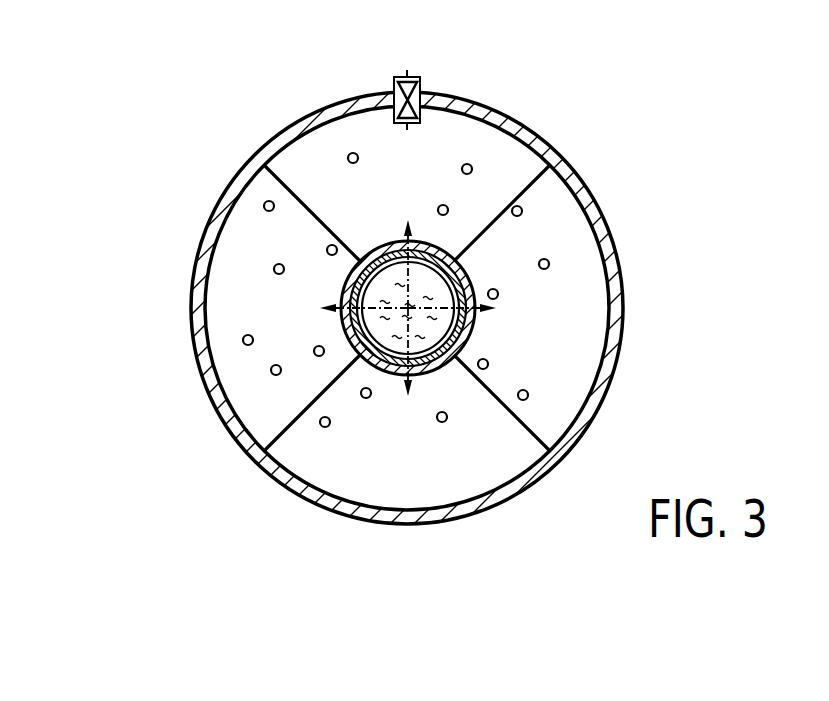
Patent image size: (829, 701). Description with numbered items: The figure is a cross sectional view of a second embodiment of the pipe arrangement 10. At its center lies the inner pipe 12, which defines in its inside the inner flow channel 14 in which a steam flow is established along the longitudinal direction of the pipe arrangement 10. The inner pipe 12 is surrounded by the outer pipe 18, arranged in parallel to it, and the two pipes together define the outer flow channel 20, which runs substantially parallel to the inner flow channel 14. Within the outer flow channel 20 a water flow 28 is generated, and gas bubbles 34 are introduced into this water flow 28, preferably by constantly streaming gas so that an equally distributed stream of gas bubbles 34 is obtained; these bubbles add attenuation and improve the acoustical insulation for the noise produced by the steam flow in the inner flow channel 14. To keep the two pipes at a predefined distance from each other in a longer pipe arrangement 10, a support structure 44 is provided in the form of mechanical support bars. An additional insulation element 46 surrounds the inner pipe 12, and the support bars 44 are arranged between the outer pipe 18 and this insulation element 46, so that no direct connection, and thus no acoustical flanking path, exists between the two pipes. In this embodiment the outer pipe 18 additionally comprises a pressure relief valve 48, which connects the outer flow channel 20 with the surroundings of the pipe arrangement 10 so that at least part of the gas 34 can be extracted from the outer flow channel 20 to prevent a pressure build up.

The pipe arrangement 10 is at (183, 124).
The inner pipe 12 is at (465, 342).
The inner flow channel 14 is at (423, 292).
The outer pipe 18 is at (566, 142).
The outer flow channel 20 is at (338, 458).
The water flow 28 is at (320, 170).
The gas bubbles 34 is at (549, 261).
The support structure 44 is at (318, 220).
The insulation element 46 is at (342, 352).
The pressure relief valve 48 is at (407, 78).